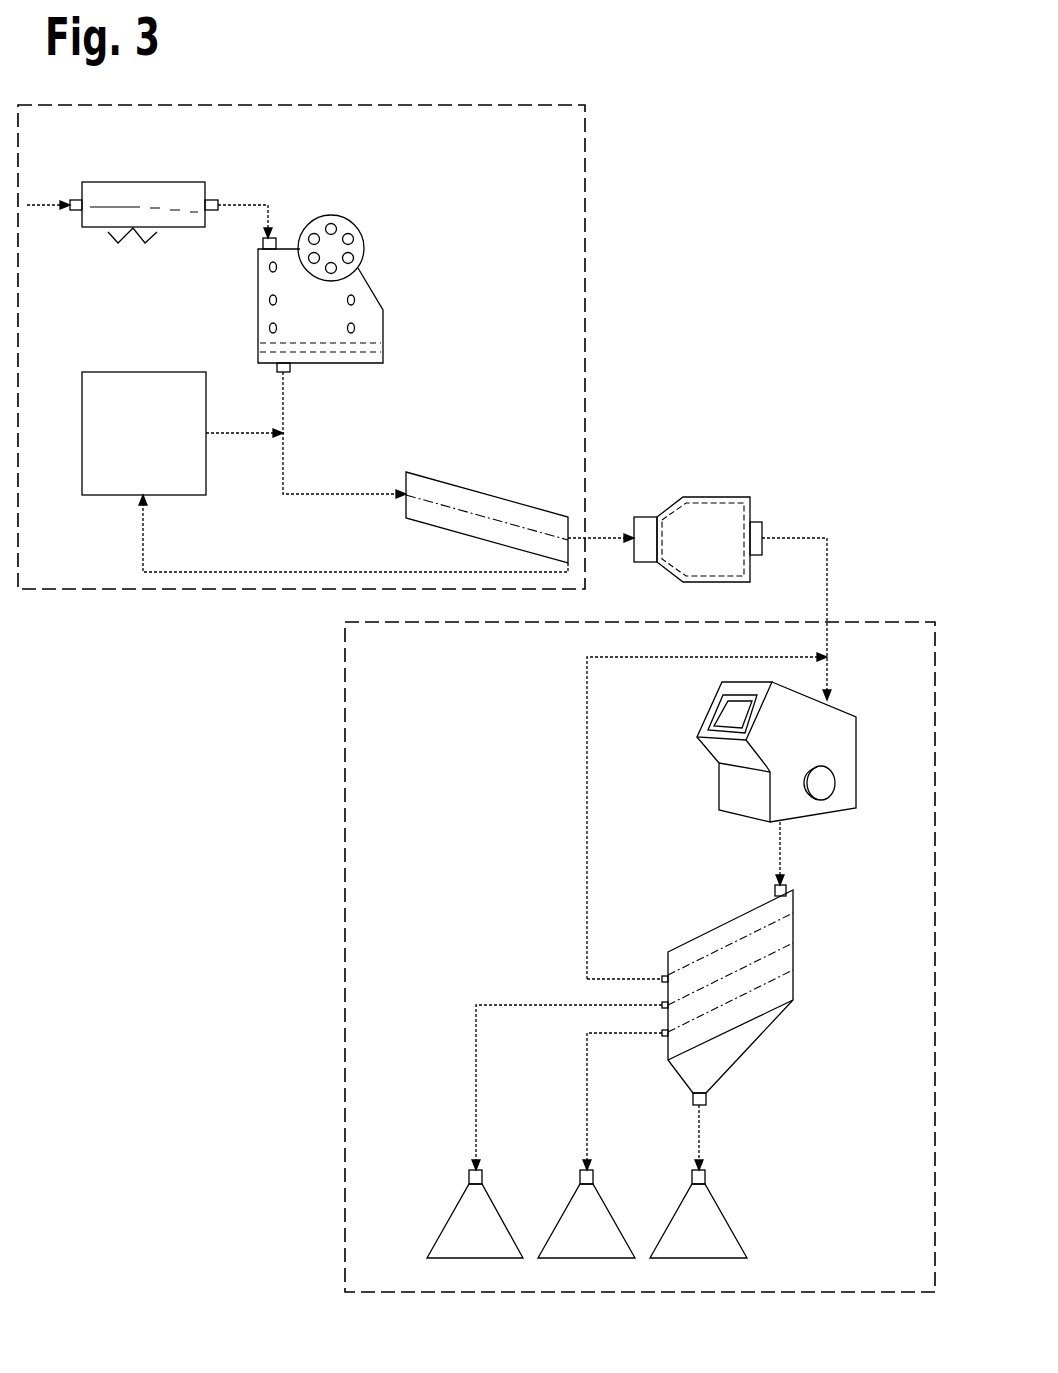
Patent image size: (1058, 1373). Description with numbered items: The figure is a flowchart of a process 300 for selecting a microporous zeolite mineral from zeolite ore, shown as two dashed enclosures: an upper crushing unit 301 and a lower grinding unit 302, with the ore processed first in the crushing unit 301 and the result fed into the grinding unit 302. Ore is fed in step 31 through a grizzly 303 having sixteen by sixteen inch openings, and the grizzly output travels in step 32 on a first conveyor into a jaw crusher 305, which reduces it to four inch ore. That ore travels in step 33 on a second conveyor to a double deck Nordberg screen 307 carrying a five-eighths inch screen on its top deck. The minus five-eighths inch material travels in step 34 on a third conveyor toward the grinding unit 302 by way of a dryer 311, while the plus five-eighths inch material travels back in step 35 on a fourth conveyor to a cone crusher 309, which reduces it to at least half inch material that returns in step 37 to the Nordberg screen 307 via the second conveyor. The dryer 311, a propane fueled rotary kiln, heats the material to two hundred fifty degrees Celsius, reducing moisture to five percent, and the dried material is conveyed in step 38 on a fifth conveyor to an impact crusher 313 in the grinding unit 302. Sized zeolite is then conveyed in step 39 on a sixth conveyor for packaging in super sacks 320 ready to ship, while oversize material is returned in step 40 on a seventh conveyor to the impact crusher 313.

The system 300 is at (762, 226).
The crushing unit 301 is at (586, 215).
The grinding unit 302 is at (344, 748).
The feeding step 31 is at (39, 203).
The first conveying step 32 is at (241, 203).
The second conveying step 33 is at (348, 492).
The third conveying step 34 is at (600, 536).
The return conveying step 35 is at (241, 570).
The return step to screen 37 is at (241, 431).
The feeding step to grinding unit 38 is at (801, 536).
The packaging conveying step 39 is at (532, 1004).
The recirculation step 40 is at (587, 855).
The grizzly 303 is at (140, 181).
The jaw crusher 305 is at (384, 321).
The double deck Nordberg screen 307 is at (494, 496).
The cone crusher 309 is at (140, 371).
The dryer 311 is at (713, 497).
The impact crusher 313 is at (719, 787).
The super sacks 320 is at (450, 1220).